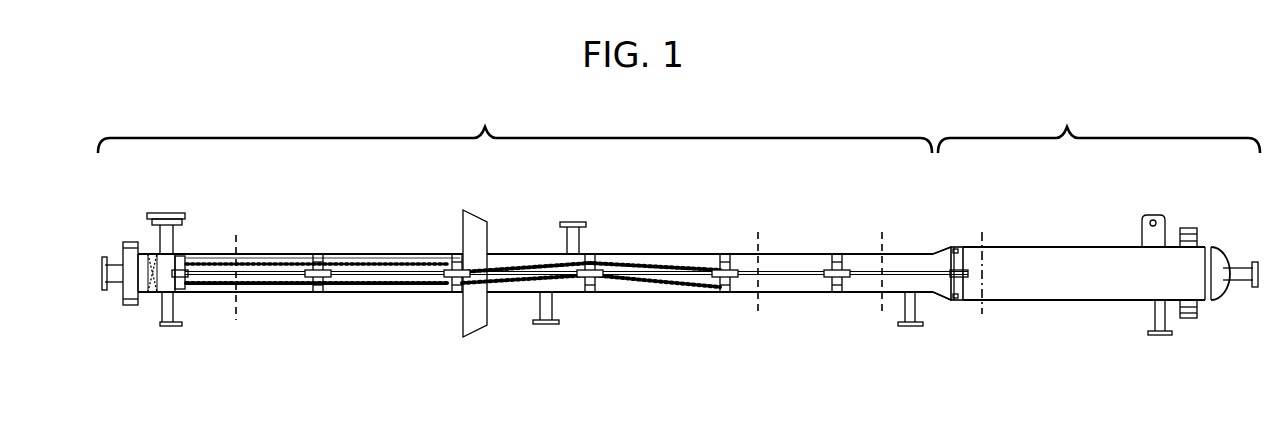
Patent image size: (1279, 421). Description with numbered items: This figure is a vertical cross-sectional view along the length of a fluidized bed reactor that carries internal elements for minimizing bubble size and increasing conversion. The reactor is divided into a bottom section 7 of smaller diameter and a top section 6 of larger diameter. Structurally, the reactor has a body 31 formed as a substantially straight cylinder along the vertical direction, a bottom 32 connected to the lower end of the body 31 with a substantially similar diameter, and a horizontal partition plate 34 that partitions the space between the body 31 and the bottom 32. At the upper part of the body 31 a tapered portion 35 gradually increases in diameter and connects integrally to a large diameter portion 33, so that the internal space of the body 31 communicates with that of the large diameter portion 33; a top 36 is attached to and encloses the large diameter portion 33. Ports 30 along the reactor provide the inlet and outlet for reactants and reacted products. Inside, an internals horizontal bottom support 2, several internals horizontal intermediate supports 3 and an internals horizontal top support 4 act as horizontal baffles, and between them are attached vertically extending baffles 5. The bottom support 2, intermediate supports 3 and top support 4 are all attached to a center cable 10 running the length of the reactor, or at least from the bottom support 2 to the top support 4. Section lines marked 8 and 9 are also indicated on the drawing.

The internals horizontal bottom support 2 is at (183, 253).
The internals horizontal intermediate supports 3 is at (320, 253).
The internals horizontal top support 4 is at (956, 246).
The vertically extending internals or baffles 5 is at (397, 294).
The top section 6 is at (1066, 221).
The bottom section 7 is at (524, 217).
The section line 8- 8 is at (757, 274).
The section line 9- 9 is at (981, 274).
The center cable 10 is at (334, 277).
The ports 30 is at (105, 270).
The body 31 is at (355, 253).
The bottom 32 is at (130, 306).
The large diameter portion 33 is at (1053, 246).
The horizontal partition plate 34 is at (152, 293).
The tapered portion 35 is at (941, 248).
The top 36 is at (1224, 257).